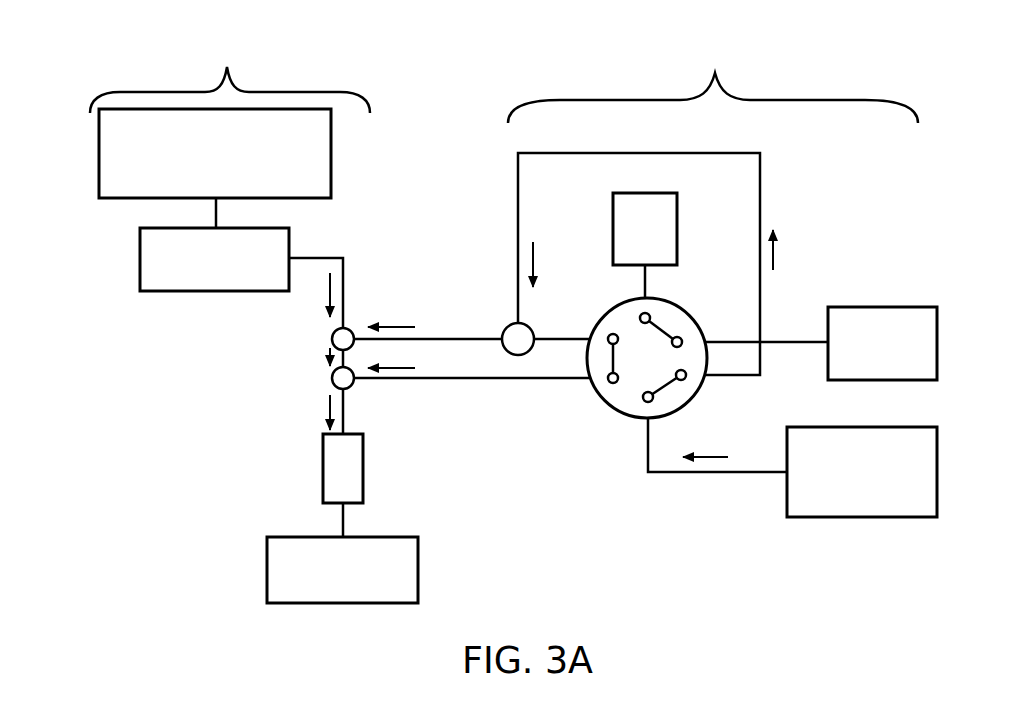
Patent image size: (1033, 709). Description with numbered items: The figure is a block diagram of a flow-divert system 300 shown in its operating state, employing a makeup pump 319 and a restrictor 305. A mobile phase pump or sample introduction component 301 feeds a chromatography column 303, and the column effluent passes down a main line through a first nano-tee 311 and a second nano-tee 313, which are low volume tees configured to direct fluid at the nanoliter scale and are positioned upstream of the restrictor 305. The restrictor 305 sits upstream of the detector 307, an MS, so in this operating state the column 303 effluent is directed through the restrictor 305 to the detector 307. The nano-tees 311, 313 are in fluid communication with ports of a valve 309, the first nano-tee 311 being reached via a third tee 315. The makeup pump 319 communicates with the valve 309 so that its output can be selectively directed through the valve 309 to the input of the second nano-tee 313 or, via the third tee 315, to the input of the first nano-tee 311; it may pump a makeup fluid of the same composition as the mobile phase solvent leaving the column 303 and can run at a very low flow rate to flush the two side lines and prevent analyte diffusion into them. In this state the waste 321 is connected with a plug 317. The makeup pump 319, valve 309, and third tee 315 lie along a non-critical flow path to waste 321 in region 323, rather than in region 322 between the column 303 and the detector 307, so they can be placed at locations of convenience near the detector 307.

The flow-divert system 300 is at (150, 370).
The mobile phase pump or sample introduction component 301 is at (232, 192).
The chromatography column 303 is at (232, 284).
The restrictor 305 is at (323, 468).
The detector 307 is at (360, 594).
The valve 309 is at (610, 409).
The first nano-tee 311 is at (332, 342).
The second nano-tee 313 is at (332, 383).
The third tee 315 is at (507, 326).
The plug 317 is at (662, 256).
The makeup pump 319 is at (880, 511).
The waste 321 is at (898, 369).
The critical flow path region 322 is at (245, 61).
The non-critical flow path region 323 is at (728, 69).